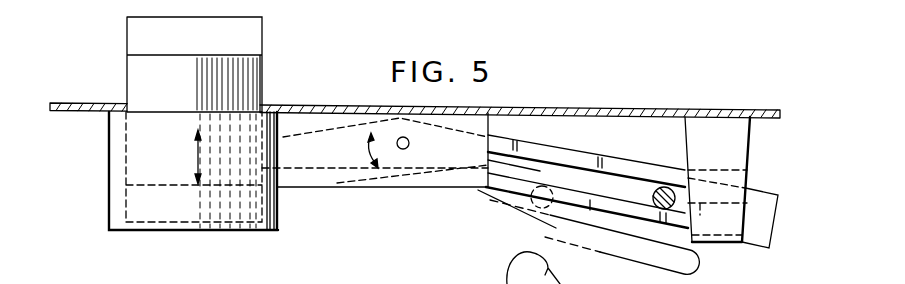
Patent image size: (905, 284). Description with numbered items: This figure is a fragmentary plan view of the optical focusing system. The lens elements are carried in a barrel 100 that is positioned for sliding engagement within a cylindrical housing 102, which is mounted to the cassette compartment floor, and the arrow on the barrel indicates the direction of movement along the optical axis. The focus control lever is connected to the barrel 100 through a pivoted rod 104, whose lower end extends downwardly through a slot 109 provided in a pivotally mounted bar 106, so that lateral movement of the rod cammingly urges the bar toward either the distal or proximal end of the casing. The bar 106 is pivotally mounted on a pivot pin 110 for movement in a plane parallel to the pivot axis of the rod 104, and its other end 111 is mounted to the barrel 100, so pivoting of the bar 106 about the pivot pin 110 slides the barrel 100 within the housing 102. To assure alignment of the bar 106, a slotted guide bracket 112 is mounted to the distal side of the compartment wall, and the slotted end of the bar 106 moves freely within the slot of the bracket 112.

The barrel 100 is at (133, 170).
The cylindrical housing 102 is at (117, 145).
The pivoted rod 104 is at (664, 187).
The pivotally mounted bar 106 is at (760, 222).
The slot 109 is at (616, 184).
The pivot pin 110 is at (403, 150).
The other end of the bar 111 is at (285, 190).
The slotted guide bracket 112 is at (754, 148).